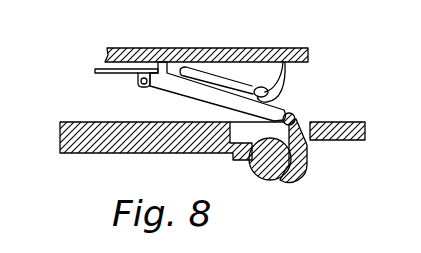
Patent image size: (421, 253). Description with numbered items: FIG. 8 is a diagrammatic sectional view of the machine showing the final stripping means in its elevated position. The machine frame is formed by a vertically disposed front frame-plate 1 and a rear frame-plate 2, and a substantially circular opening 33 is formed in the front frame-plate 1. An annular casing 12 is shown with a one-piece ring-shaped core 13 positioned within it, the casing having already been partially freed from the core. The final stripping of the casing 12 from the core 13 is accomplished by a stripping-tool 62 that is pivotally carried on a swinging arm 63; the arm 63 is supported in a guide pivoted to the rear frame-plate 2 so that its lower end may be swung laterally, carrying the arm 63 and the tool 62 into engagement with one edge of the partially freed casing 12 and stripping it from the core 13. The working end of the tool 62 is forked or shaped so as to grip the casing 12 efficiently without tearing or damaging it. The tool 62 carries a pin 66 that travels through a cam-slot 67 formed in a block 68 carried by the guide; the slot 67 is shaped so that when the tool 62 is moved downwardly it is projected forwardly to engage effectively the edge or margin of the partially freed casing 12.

The front frame-plate 1 is at (92, 153).
The rear frame-plate 2 is at (239, 48).
The annular casing 12 is at (307, 167).
The ring-shaped core 13 is at (277, 183).
The circular opening 33 is at (192, 122).
The stripping-tool 62 is at (280, 111).
The swinging arm 63 is at (118, 75).
The pin 66 is at (283, 62).
The cam-slot 67 is at (196, 66).
The block 68 is at (286, 78).